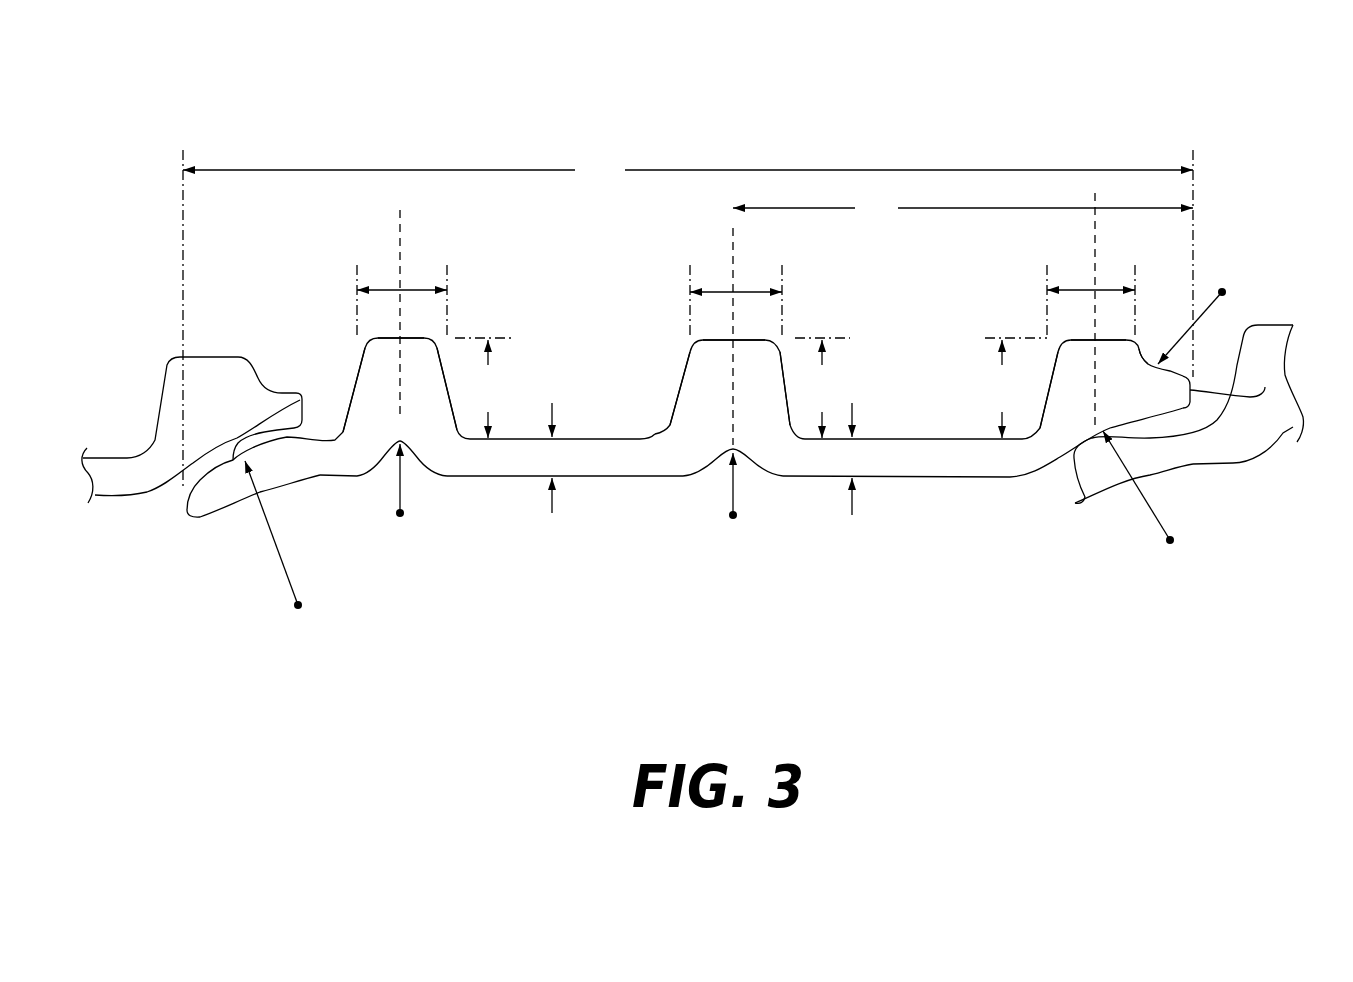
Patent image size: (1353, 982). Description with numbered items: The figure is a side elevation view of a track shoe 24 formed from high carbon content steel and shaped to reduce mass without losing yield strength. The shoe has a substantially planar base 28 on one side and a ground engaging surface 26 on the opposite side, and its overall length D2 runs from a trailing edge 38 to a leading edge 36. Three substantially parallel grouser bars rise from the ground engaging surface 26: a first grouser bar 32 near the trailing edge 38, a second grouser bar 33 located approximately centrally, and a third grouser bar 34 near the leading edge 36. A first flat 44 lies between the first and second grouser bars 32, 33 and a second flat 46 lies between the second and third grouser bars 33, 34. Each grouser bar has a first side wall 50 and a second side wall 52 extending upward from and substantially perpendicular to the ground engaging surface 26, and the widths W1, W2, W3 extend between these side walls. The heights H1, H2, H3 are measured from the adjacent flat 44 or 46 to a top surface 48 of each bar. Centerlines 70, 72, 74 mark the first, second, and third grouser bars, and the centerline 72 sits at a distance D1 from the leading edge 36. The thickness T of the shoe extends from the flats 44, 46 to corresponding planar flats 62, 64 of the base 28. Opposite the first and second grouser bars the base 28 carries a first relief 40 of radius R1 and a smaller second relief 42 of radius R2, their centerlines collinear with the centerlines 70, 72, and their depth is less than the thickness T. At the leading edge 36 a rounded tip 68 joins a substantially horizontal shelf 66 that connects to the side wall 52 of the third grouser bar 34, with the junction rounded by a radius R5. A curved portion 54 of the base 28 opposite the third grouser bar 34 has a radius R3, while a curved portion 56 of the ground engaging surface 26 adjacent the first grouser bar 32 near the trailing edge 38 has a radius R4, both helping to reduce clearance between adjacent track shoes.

The track shoe 24 is at (322, 104).
The ground engaging surface 26 is at (527, 430).
The base 28 is at (521, 496).
The first grouser bar 32 is at (347, 320).
The second grouser bar 33 is at (680, 338).
The third grouser bar 34 is at (1017, 330).
The leading edge 36 is at (1243, 328).
The trailing edge 38 is at (185, 517).
The first relief 40 is at (380, 465).
The second relief 42 is at (750, 470).
The first flat 44 is at (637, 439).
The second flat 46 is at (907, 439).
The top surface 48 is at (447, 338).
The first side wall 50 is at (353, 370).
The second side wall 52 is at (450, 392).
The curved portion 54 is at (1075, 503).
The curved portion 56 is at (300, 400).
The flat 62 is at (633, 477).
The flat 64 is at (928, 478).
The shelf 66 is at (1210, 347).
The tip 68 is at (1233, 377).
The centerline 70 is at (400, 238).
The centerline 72 is at (733, 222).
The centerline 74 is at (1097, 194).
The distance D1 is at (963, 219).
The overall length D2 is at (688, 174).
The width W1 is at (383, 290).
The width W2 is at (720, 292).
The width W3 is at (1077, 290).
The height H1 is at (485, 388).
The height H2 is at (822, 388).
The height H3 is at (1016, 388).
The thickness T is at (702, 476).
The first radius R1 is at (406, 501).
The second radius R2 is at (733, 483).
The radius R3 is at (1138, 487).
The radius R4 is at (281, 535).
The radius R5 is at (1192, 312).